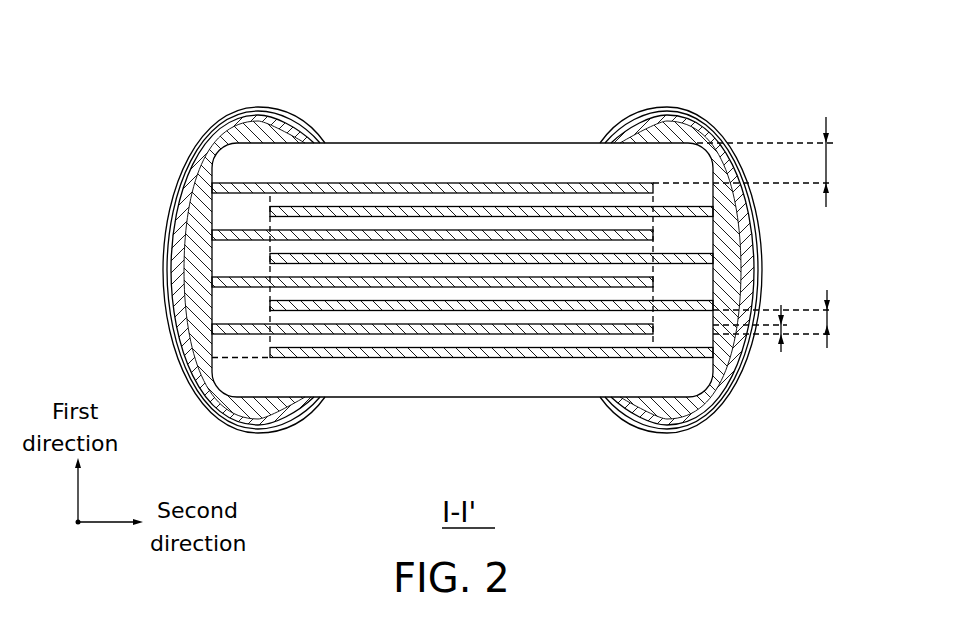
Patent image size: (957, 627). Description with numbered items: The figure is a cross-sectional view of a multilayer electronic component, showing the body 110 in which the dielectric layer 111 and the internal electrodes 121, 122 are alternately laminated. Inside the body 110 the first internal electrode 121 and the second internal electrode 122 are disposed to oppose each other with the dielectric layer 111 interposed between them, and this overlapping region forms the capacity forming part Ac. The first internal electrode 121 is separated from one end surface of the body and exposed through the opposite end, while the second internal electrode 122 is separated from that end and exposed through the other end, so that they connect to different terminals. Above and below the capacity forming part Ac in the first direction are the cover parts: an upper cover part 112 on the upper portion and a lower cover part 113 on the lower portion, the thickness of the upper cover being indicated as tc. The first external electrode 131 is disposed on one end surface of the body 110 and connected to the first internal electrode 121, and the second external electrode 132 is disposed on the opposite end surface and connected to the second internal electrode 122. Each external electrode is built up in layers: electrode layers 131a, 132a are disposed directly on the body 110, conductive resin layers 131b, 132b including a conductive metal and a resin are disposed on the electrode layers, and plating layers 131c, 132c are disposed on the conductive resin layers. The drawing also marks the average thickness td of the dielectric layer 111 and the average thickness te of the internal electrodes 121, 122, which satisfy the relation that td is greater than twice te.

The body 110 is at (392, 143).
The dielectric layer 111 is at (325, 215).
The upper cover part 112 is at (457, 152).
The lower cover part 113 is at (475, 380).
The first internal electrode 121 is at (510, 184).
The second internal electrode 122 is at (583, 207).
The first external electrode 131 is at (176, 270).
The first electrode layer 131a is at (199, 236).
The first conductive resin layer 131b is at (174, 268).
The first plating layer 131c is at (83, 228).
The second external electrode 132 is at (752, 270).
The second electrode layer 132a is at (727, 227).
The second conductive resin layer 132b is at (752, 250).
The second plating layer 132c is at (758, 275).
The capacity forming part Ac is at (572, 358).
The cover part thickness tc is at (845, 160).
The average thickness of the dielectric layer td is at (847, 315).
The average thickness of the internal electrodes te is at (801, 337).